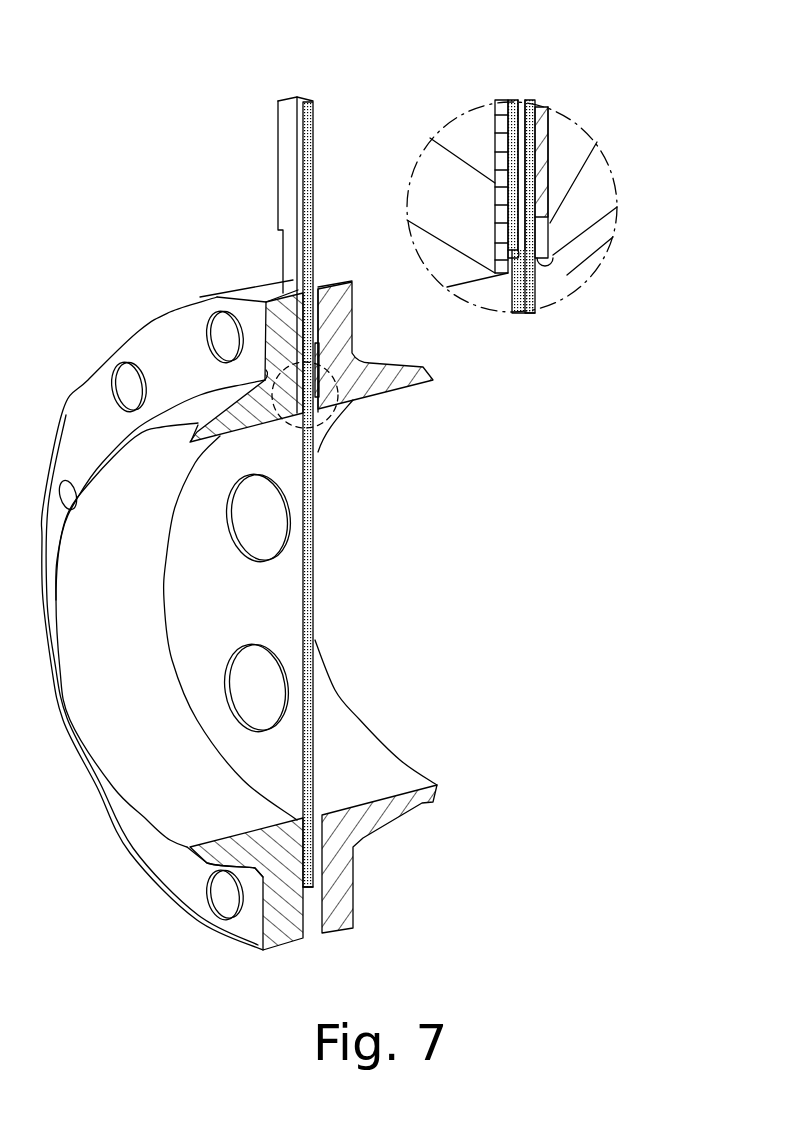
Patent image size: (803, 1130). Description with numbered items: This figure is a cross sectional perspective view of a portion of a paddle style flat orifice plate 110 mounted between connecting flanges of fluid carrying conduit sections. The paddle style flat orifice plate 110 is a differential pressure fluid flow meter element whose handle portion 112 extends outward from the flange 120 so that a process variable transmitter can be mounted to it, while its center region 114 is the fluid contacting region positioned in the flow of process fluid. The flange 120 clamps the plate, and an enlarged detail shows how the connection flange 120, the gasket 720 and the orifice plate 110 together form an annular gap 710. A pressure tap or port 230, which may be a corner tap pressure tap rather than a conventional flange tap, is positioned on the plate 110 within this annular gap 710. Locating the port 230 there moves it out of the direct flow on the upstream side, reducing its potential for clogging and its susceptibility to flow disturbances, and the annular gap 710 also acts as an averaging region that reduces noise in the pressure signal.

The paddle style flat orifice plate 110 is at (317, 483).
The handle portion 112 is at (287, 160).
The center region 114 is at (277, 580).
The flange 120 is at (257, 397).
The pressure tap or port 230 is at (512, 280).
The annular gap 710 is at (562, 258).
The gasket 720 is at (498, 167).